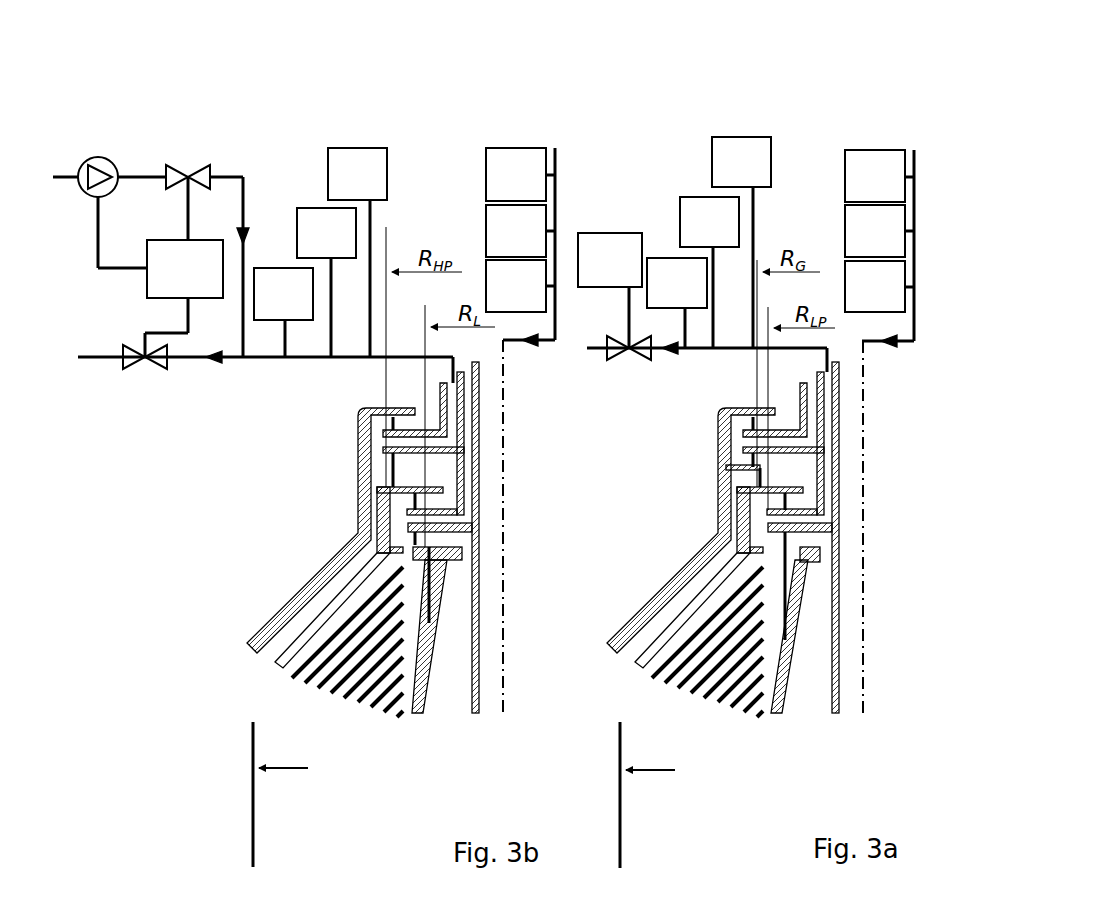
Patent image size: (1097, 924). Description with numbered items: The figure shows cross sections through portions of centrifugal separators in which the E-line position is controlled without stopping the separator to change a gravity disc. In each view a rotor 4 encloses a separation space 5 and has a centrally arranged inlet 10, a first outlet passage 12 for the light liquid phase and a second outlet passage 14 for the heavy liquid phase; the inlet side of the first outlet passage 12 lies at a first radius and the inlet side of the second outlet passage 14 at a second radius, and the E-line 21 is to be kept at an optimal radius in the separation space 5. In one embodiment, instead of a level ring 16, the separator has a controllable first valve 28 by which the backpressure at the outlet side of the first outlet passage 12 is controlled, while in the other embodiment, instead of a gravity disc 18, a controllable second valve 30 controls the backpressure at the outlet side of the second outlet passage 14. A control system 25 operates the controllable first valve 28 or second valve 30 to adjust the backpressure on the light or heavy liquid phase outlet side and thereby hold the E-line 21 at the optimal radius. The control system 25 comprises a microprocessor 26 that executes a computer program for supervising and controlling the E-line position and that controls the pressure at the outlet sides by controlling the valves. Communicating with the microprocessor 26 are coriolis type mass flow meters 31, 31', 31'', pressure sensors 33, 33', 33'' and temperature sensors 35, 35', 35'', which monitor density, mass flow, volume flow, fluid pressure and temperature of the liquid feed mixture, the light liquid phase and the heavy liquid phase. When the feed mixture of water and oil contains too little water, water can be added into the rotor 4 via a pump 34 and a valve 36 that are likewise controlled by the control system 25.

In FIG. 3B, the rotor 4 is at (277, 562).
In FIG. 3A, the rotor 4 is at (656, 563).
In FIG. 3B, the separation space 5 is at (347, 656).
In FIG. 3A, the separation space 5 is at (707, 656).
In FIG. 3B, the inlet 10 is at (492, 523).
In FIG. 3A, the inlet 10 is at (850, 646).
In FIG. 3A, the first outlet passage 12 is at (803, 520).
In FIG. 3B, the second outlet passage 14 is at (437, 440).
In FIG. 3B, the level ring 16 is at (420, 556).
In FIG. 3A, the gravity disc 18 is at (735, 470).
In FIG. 3B, the E-line 21 is at (253, 846).
In FIG. 3A, the E-line 21 is at (620, 846).
In FIG. 3B, the control system 25 is at (181, 428).
In FIG. 3A, the control system 25 is at (613, 170).
In FIG. 3B, the microprocessor 26 is at (184, 298).
In FIG. 3A, the microprocessor 26 is at (610, 290).
In FIG. 3A, the controllable first valve 28 is at (620, 364).
In FIG. 3B, the controllable second valve 30 is at (160, 364).
In FIG. 3B, the coriolis type mass flow meter 31 is at (520, 286).
In FIG. 3A, the coriolis type mass flow meter 31 is at (879, 286).
In FIG. 3B, the pressure sensor 33 is at (520, 231).
In FIG. 3A, the pressure sensor 33 is at (879, 231).
In FIG. 3B, the temperature sensor 35 is at (520, 174).
In FIG. 3A, the temperature sensor 35 is at (879, 176).
In FIG. 3A, the coriolis type mass flow meter 31' is at (677, 303).
In FIG. 3A, the pressure sensor 33' is at (709, 272).
In FIG. 3A, the temperature sensor 35' is at (741, 242).
In FIG. 3B, the coriolis type mass flow meter 31'' is at (283, 312).
In FIG. 3B, the pressure sensor 33'' is at (326, 282).
In FIG. 3B, the temperature sensor 35'' is at (357, 252).
In FIG. 3B, the pump 34 is at (108, 162).
In FIG. 3B, the valve 36 is at (192, 164).